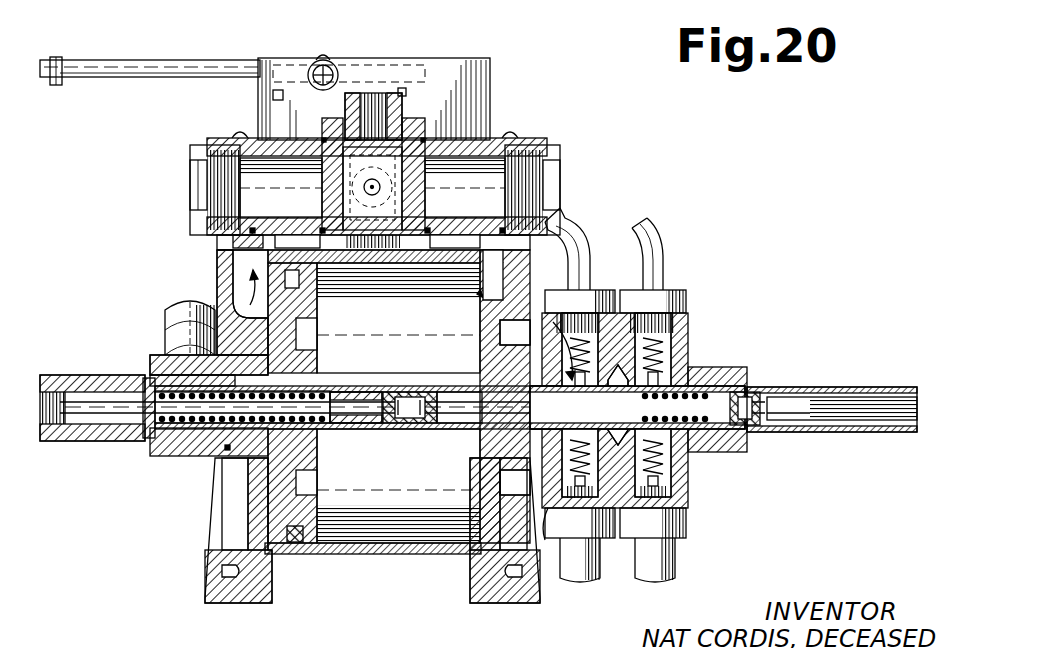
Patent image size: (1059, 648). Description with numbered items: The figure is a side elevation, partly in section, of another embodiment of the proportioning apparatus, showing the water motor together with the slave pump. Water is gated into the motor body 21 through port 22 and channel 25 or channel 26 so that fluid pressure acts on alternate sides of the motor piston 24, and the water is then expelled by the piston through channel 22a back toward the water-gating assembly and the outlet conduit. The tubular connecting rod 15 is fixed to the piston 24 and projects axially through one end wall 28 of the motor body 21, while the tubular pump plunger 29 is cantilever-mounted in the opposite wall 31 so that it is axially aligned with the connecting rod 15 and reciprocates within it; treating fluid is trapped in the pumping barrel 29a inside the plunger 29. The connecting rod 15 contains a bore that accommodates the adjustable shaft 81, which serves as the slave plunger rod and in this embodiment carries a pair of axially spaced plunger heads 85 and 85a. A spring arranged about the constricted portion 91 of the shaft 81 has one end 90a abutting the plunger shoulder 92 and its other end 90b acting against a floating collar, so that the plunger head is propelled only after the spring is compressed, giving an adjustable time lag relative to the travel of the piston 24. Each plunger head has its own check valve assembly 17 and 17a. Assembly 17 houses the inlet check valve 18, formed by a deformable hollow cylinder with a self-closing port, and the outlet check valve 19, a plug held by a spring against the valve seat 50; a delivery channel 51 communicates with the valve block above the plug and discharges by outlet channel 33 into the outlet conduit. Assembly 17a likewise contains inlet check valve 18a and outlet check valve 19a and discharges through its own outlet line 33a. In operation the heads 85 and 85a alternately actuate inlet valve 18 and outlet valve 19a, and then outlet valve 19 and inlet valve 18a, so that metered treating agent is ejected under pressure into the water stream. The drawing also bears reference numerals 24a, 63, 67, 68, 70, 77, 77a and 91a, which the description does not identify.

The connecting rod 15 is at (300, 374).
The check valve assembly 17 is at (602, 282).
The check valve assembly 17a is at (700, 332).
The inlet check valve 18 is at (560, 470).
The inlet check valve 18a is at (662, 468).
The outlet check valve 19 is at (560, 372).
The outlet check valve 19a is at (660, 340).
The motor body 21 is at (375, 560).
The port 22 is at (335, 184).
The channel 22a is at (246, 222).
The motor piston 24 is at (308, 302).
The bolt 24a is at (296, 545).
The channel 25 is at (232, 288).
The channel 26 is at (482, 300).
The end wall 28 is at (218, 500).
The tubular pump plunger 29 is at (372, 392).
The pumping barrel 29a is at (850, 436).
The opposite wall 31 is at (478, 452).
The outlet channel 33 is at (585, 255).
The outlet line 33a is at (660, 245).
The valve seat 50 is at (556, 512).
The delivery channel 51 is at (558, 300).
The handle rod 63 is at (108, 80).
The pivot 67 is at (312, 58).
The handle block 68 is at (478, 92).
The end cap 70 is at (58, 86).
The pipe 77 is at (572, 572).
The pipe 77a is at (652, 572).
The adjustable shaft 81 is at (58, 392).
The slave pump plunger head 85 is at (432, 388).
The plunger head 85a is at (760, 388).
The spring end 90a is at (158, 370).
The spring end 90b is at (370, 426).
The constricted portion 91 is at (190, 428).
The rod end 91a is at (495, 416).
The plunger shoulder 92 is at (146, 440).